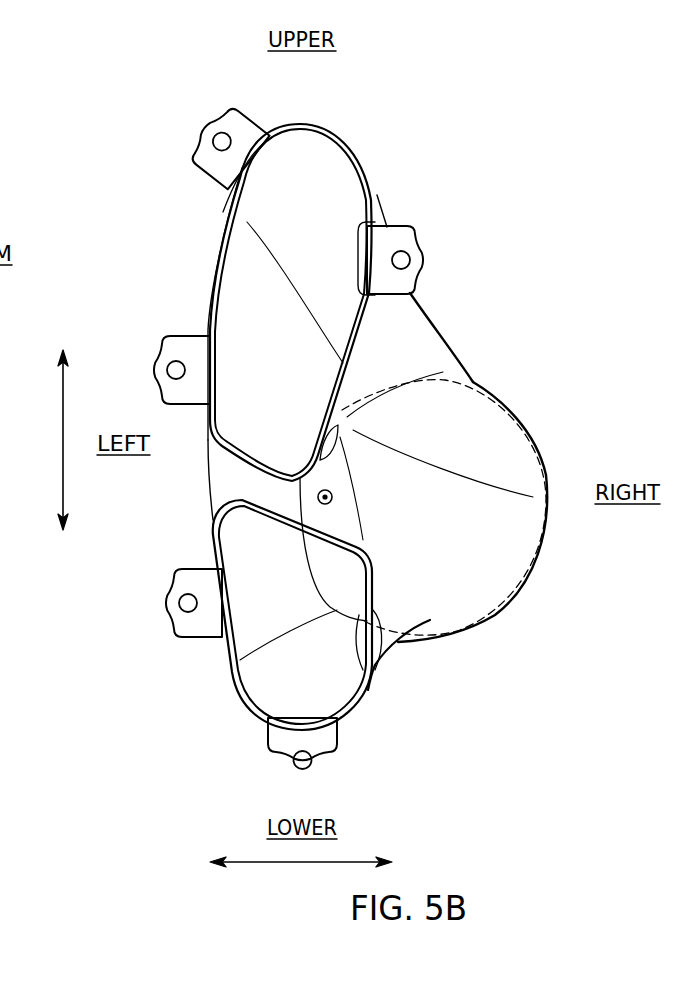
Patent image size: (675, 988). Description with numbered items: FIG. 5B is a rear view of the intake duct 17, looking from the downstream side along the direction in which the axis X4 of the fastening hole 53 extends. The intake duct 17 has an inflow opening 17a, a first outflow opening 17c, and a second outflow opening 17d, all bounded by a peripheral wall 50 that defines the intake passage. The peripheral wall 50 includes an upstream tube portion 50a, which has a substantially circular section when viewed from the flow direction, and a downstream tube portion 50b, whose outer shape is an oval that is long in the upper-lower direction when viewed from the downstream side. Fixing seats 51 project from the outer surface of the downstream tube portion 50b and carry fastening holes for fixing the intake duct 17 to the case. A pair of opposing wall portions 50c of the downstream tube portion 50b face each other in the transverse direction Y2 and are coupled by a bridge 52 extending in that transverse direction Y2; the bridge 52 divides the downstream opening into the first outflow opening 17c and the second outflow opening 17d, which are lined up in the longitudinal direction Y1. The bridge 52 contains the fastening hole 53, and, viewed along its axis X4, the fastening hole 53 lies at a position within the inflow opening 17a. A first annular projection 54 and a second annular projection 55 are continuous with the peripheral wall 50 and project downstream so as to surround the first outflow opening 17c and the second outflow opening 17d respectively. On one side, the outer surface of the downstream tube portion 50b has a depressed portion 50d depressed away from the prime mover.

The intake duct 17 is at (527, 218).
The inflow opening 17a is at (545, 550).
The first outflow opening 17c is at (338, 687).
The second outflow opening 17d is at (240, 277).
The peripheral wall 50 is at (452, 340).
The upstream tube portion 50a is at (510, 443).
The downstream tube portion 50b is at (400, 200).
The opposing wall portions 50c is at (213, 301).
The depressed portion 50d is at (357, 450).
The fixing seats 51 is at (203, 124).
The bridge 52 is at (222, 482).
The fastening hole 53 is at (334, 500).
The first annular projection 54 is at (226, 662).
The second annular projection 55 is at (221, 233).
The axis of the fastening hole X4 is at (316, 498).
The longitudinal direction Y1 is at (60, 438).
The transverse direction Y2 is at (297, 865).